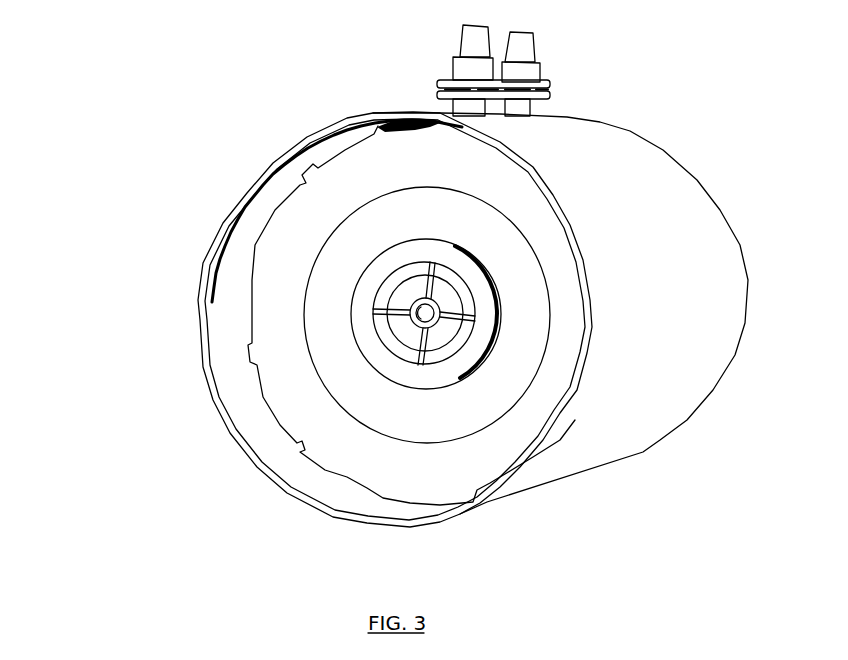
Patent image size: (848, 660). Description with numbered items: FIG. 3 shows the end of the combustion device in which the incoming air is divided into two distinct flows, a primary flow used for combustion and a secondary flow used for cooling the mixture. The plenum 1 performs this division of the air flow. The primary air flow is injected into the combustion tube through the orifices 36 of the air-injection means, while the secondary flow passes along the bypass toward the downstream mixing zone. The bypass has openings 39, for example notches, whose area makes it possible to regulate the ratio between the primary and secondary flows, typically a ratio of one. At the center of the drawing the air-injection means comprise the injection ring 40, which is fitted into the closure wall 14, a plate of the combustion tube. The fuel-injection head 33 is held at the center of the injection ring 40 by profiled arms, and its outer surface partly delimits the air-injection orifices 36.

The plenum 1 is at (247, 313).
The closure wall 14 is at (305, 223).
The openings 39 is at (330, 157).
The injection ring 40 is at (373, 348).
The air-injection orifices 36 is at (445, 348).
The fuel-injection head 33 is at (418, 325).